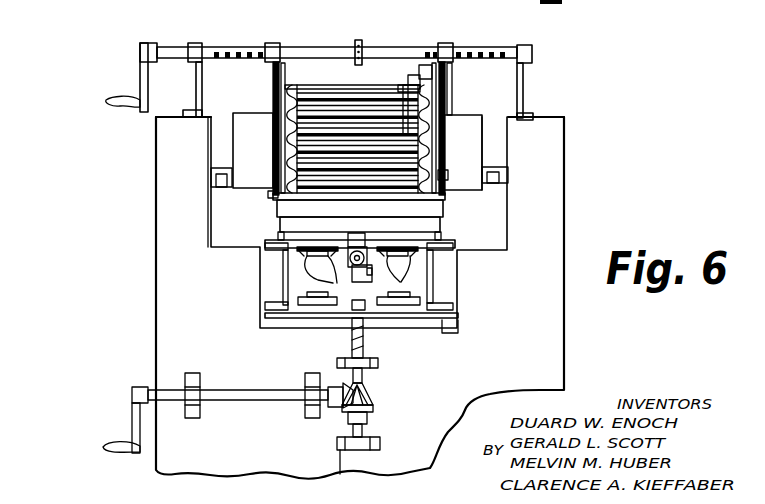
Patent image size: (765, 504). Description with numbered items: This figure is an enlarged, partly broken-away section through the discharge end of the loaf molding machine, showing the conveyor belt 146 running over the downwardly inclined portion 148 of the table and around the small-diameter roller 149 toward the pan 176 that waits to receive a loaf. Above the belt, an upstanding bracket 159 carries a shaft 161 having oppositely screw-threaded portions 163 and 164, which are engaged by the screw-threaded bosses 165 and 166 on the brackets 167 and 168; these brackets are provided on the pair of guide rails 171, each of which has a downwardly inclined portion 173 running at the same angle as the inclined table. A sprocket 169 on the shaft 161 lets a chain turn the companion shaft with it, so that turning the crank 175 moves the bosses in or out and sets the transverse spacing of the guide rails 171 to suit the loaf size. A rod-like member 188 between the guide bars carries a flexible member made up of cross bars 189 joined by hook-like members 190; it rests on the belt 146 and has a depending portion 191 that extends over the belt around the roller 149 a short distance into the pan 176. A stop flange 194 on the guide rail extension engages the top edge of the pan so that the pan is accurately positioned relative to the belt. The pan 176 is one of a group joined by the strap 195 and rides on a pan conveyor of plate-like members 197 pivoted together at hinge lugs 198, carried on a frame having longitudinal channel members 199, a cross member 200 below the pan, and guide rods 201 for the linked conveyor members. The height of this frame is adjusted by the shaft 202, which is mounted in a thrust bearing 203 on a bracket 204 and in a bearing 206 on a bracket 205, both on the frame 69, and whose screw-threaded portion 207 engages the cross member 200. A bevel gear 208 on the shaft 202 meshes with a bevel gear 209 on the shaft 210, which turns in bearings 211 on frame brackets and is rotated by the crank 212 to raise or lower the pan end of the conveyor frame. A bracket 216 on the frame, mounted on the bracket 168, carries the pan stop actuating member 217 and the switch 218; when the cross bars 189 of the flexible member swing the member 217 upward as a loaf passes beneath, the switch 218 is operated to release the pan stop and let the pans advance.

The frame 69 is at (564, 331).
The conveyor belt 146 is at (242, 143).
The downwardly inclined portion 148 is at (504, 133).
The roller 149 is at (495, 166).
The upstanding bracket 159 is at (194, 82).
The shaft 161 is at (384, 52).
The screw-threaded portion 163 is at (236, 52).
The screw-threaded portion 164 is at (467, 50).
The screw-threaded boss 165 is at (274, 46).
The screw-threaded boss 166 is at (442, 44).
The bracket 167 is at (282, 72).
The bracket 168 is at (453, 86).
The sprocket 169 is at (357, 40).
The guide rail 171 is at (283, 100).
The downwardly inclined portion 173 is at (280, 142).
The crank 175 is at (108, 99).
The pan 176 is at (437, 233).
The rod-like member 188 is at (305, 85).
The cross bar 189 is at (322, 115).
The hook-like member 190 is at (290, 122).
The depending portion 191 is at (441, 178).
The stop flange 194 is at (268, 195).
The strap 195 is at (443, 210).
The plate-like member 197 is at (318, 247).
The hinge lug 198 is at (332, 247).
The longitudinal channel member 199 is at (283, 260).
The cross member 200 is at (446, 332).
The guide rod 201 is at (359, 269).
The shaft 202 is at (360, 380).
The thrust bearing 203 is at (380, 445).
The bracket 204 is at (340, 470).
The bracket 205 is at (378, 363).
The bearing 206 is at (367, 355).
The screw-threaded portion 207 is at (352, 343).
The bevel gear 208 is at (373, 405).
The bevel gear 209 is at (333, 410).
The shaft 210 is at (242, 398).
The bearing 211 is at (198, 385).
The crank 212 is at (130, 418).
The bracket 216 is at (453, 75).
The pan stop actuating member 217 is at (398, 92).
The switch 218 is at (418, 78).